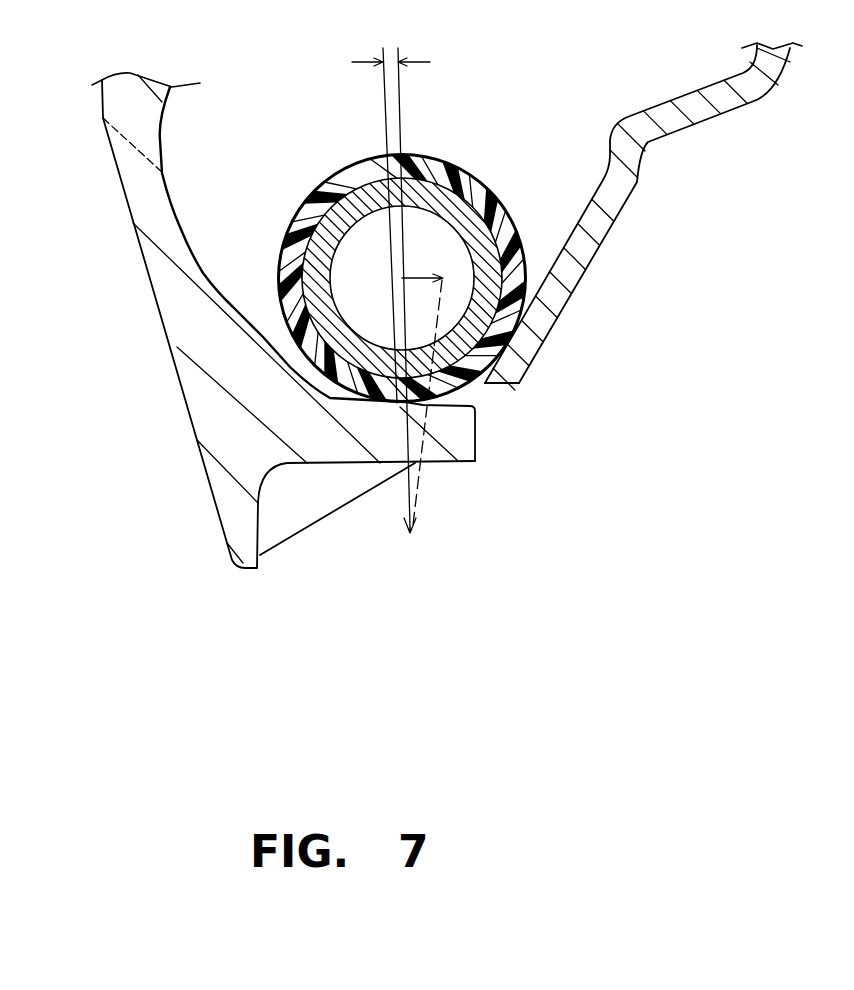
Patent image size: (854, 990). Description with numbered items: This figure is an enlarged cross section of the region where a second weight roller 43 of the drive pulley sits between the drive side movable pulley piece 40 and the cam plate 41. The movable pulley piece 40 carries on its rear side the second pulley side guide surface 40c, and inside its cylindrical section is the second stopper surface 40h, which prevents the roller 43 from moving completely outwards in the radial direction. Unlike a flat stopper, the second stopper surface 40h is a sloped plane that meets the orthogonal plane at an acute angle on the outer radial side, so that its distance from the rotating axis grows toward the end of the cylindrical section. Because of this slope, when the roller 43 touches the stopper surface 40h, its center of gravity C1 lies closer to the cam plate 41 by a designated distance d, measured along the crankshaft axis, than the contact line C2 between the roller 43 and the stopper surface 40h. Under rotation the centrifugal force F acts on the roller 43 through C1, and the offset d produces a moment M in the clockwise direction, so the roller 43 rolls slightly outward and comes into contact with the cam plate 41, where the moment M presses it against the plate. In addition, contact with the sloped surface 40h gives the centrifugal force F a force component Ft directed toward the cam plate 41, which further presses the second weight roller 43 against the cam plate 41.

The drive side movable pulley piece 40 is at (173, 291).
The second pulley side guide surface 40c is at (173, 205).
The second stopper surface 40h is at (457, 403).
The cam plate 41 is at (702, 113).
The second weight roller 43 is at (323, 207).
The designated distance d is at (390, 50).
The force component towards the cam plate Ft is at (418, 268).
The moment M is at (556, 156).
The center of gravity of the second weight roller C1 is at (392, 284).
The contact line C2 is at (401, 420).
The centrifugal force F is at (417, 485).